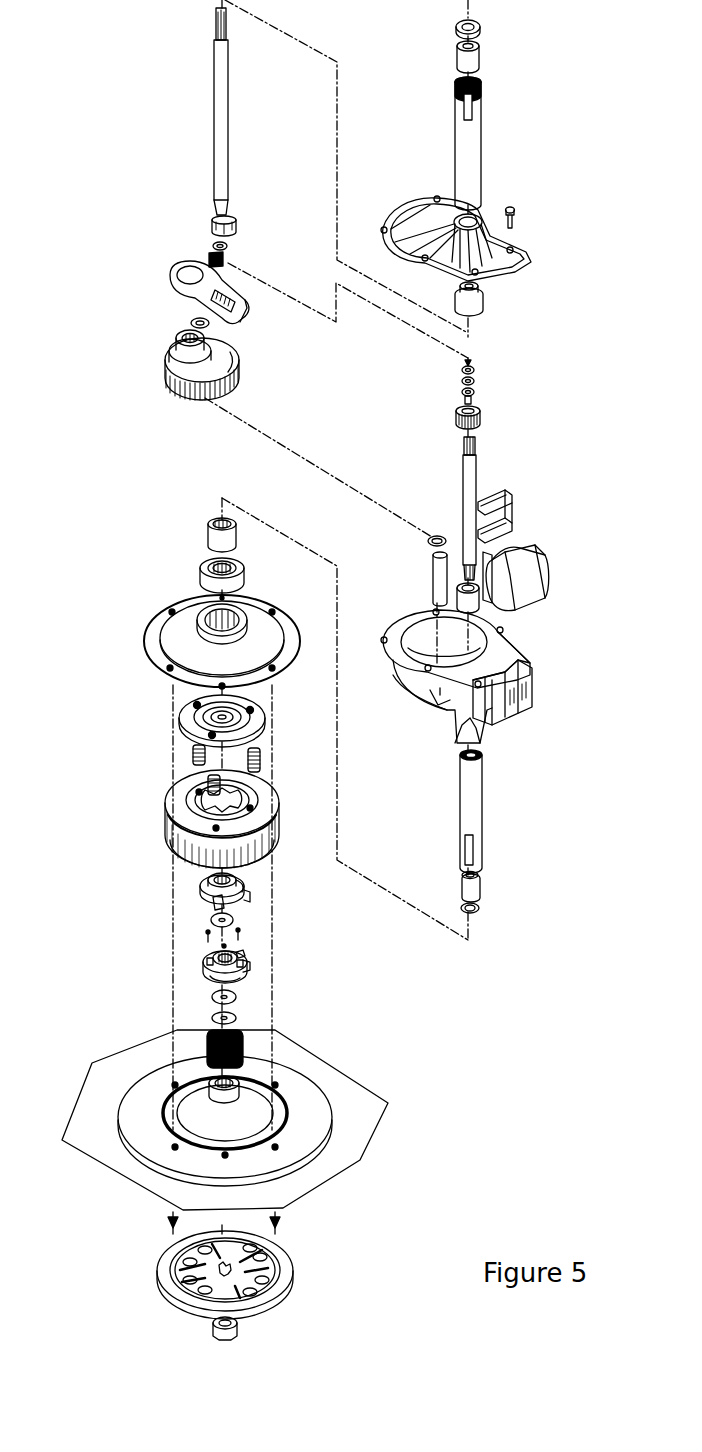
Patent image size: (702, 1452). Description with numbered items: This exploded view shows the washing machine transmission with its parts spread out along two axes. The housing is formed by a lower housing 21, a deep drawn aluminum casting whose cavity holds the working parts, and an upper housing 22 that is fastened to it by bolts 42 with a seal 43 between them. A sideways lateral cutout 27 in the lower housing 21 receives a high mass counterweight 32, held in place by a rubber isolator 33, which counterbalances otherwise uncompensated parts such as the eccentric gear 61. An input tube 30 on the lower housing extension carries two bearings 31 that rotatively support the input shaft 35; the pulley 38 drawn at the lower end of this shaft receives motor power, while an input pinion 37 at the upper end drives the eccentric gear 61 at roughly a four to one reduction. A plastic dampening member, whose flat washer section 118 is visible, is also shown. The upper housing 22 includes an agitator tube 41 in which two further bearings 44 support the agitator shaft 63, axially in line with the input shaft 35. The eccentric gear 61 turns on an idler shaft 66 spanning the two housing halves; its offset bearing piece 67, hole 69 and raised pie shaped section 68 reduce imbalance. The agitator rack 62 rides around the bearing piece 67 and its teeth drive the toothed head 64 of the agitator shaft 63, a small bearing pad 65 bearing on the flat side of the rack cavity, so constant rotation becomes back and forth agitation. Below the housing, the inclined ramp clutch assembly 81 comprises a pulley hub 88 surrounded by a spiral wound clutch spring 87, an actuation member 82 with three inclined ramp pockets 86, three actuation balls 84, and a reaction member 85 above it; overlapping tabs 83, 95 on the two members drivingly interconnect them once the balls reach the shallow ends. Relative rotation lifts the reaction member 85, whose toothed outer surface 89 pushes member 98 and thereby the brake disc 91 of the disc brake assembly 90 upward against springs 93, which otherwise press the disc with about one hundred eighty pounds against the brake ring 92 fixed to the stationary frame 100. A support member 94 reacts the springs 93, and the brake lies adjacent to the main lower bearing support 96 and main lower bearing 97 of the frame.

The lower housing 21 is at (400, 672).
The upper housing 22 is at (528, 258).
The lateral cutout 27 is at (515, 705).
The input tube 30 is at (478, 803).
The bearings 31 is at (478, 602).
The counterweight 32 is at (540, 556).
The rubber isolator 33 is at (512, 497).
The input shaft 35 is at (472, 475).
The input pinion 37 is at (480, 408).
The pulley 38 is at (165, 1262).
The agitator tube 41 is at (477, 150).
The bolts 42 is at (515, 210).
The seal 43 is at (513, 660).
The bearings 44 is at (478, 58).
The eccentric gear 61 is at (201, 369).
The agitator rack 62 is at (175, 270).
The agitator shaft 63 is at (213, 175).
The toothed head 64 is at (213, 228).
The bearing pad 65 is at (210, 250).
The idler shaft 66 is at (433, 572).
The bearing piece 67 is at (183, 340).
The raised pie shaped section 68 is at (238, 362).
The hole 69 is at (197, 320).
The inclined ramp clutch assembly 81 is at (84, 949).
The actuation member 82 is at (205, 960).
The tab 83 is at (248, 965).
The actuation balls 84 is at (240, 928).
The reaction member 85 is at (203, 880).
The inclined ramp pockets 86 is at (240, 954).
The clutch spring 87 is at (207, 1045).
The pulley hub 88 is at (200, 1088).
The toothed outer surface 89 is at (240, 882).
The disc brake assembly 90 is at (84, 801).
The brake disc 91 is at (283, 835).
The brake ring 92 is at (165, 1112).
The springs 93 is at (193, 750).
The support member 94 is at (188, 720).
The tab 95 is at (248, 894).
The main lower bearing support 96 is at (155, 640).
The main lower bearing 97 is at (200, 576).
The member 98 is at (175, 802).
The frame 100 is at (88, 1108).
The flat washer section 118 is at (475, 388).